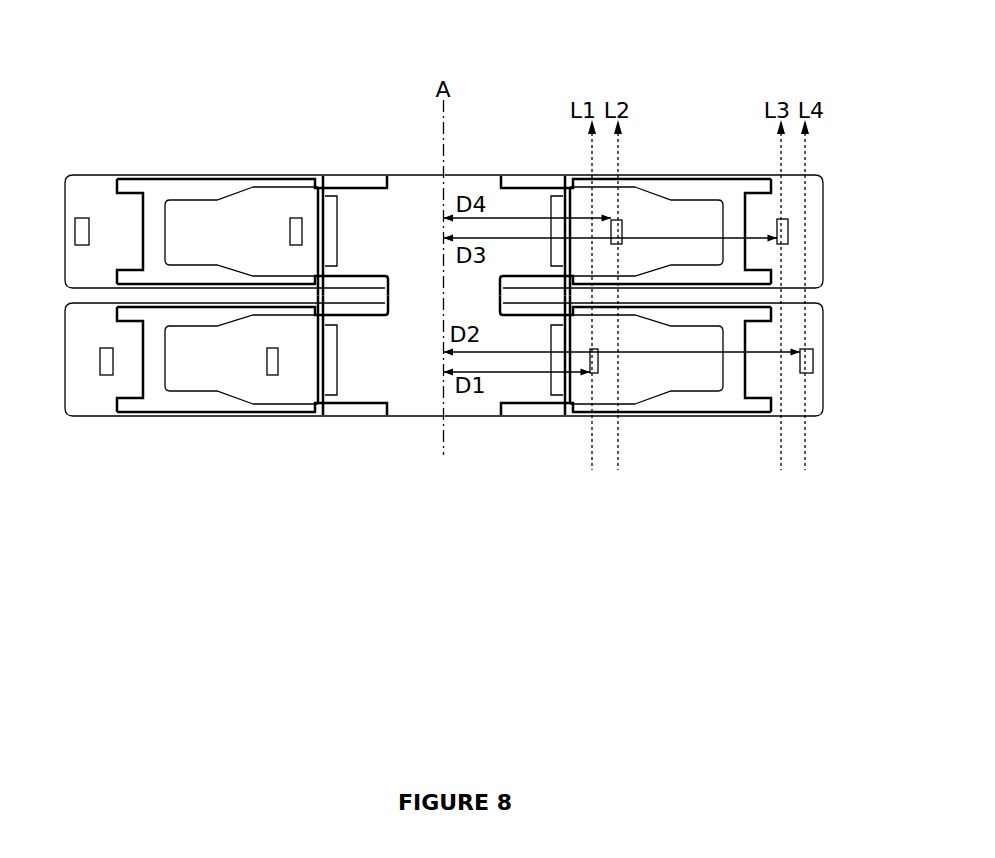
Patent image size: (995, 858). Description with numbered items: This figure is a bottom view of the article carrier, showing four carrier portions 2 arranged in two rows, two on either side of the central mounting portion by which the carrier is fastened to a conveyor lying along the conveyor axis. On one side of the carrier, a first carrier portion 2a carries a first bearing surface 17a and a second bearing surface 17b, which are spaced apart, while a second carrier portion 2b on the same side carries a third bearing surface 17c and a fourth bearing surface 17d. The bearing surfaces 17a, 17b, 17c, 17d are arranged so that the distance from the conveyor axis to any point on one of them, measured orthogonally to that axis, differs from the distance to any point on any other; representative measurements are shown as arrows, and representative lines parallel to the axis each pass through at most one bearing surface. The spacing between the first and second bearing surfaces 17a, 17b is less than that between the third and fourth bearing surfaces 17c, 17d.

The carrier portion 2 is at (93, 183).
The first carrier portion 2a is at (685, 175).
The second carrier portion 2b is at (682, 418).
The first bearing surface 17a is at (614, 218).
The second bearing surface 17b is at (776, 236).
The third bearing surface 17c is at (597, 374).
The fourth bearing surface 17d is at (812, 375).